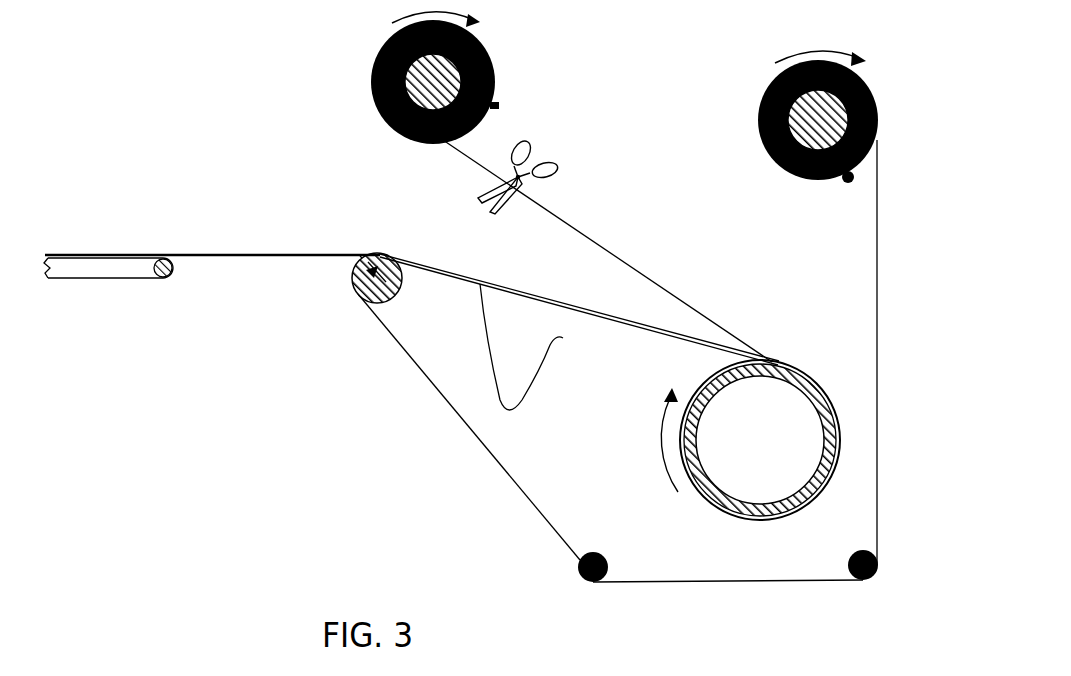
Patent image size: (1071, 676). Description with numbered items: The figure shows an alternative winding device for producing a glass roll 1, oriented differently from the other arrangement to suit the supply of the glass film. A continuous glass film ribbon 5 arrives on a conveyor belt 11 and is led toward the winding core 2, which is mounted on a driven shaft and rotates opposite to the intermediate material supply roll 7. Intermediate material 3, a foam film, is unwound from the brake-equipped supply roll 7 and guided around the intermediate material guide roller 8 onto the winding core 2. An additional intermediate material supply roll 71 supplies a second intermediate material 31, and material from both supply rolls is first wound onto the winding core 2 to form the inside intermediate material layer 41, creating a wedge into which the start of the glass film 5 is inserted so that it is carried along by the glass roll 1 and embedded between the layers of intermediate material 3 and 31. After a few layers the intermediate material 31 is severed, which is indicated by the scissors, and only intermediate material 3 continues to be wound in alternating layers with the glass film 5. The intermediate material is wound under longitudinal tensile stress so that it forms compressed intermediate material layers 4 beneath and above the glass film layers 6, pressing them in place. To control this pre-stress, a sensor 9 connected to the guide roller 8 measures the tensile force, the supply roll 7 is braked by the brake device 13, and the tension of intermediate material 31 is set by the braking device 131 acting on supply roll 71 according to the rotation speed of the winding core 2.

The glass roll 1 is at (681, 384).
The winding core 2 is at (832, 387).
The intermediate material 3 is at (424, 372).
The compressed intermediate material layer 4 is at (838, 478).
The inside intermediate material layer 41 is at (842, 430).
The glass film ribbon 5 is at (252, 255).
The glass film layers 6 is at (783, 514).
The intermediate material supply roll 7 is at (866, 75).
The intermediate material guide roller 8 is at (403, 272).
The sensor 9 is at (352, 262).
The conveyor belt 11 is at (178, 278).
The brake device 13 is at (853, 180).
The intermediate material 31 is at (557, 218).
The additional intermediate material supply roll 71 is at (481, 33).
The braking device 131 is at (497, 110).